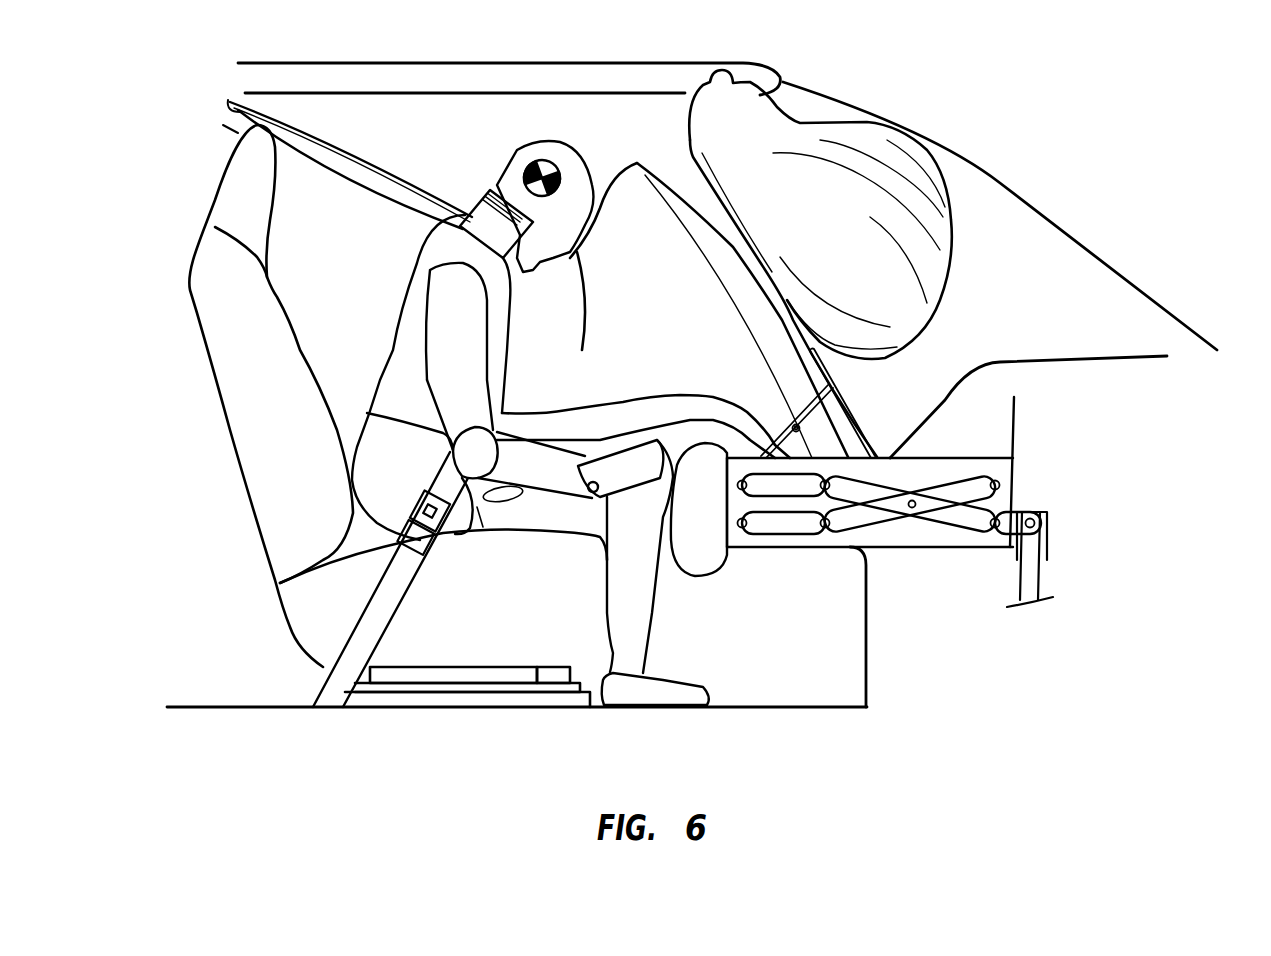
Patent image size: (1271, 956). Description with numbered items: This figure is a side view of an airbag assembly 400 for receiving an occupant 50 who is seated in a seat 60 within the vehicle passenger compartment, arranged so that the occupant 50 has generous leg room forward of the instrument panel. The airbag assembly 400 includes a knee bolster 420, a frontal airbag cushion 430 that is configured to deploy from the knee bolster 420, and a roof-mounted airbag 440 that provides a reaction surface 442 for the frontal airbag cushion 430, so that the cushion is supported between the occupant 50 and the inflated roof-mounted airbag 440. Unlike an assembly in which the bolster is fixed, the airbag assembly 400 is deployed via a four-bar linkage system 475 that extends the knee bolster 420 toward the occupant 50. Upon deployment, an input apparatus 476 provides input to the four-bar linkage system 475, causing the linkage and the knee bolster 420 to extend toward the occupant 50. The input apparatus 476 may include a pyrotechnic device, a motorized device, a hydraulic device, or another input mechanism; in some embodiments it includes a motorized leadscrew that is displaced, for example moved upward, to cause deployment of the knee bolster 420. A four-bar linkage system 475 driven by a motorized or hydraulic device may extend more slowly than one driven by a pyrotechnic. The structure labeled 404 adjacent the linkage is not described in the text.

The occupant 50 is at (470, 315).
The seat 60 is at (283, 398).
The airbag assembly 400 is at (772, 264).
The instrument panel support post 404 is at (1013, 467).
The knee bolster 420 is at (856, 550).
The frontal airbag cushion 430 is at (662, 300).
The roof-mounted airbag 440 is at (850, 226).
The reaction surface 442 is at (747, 277).
The four-bar linkage system 475 is at (910, 543).
The input apparatus 476 is at (1033, 543).